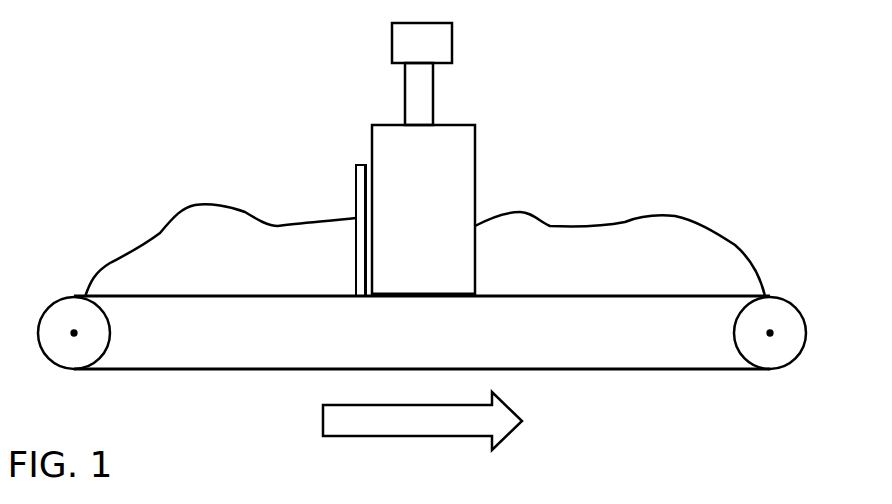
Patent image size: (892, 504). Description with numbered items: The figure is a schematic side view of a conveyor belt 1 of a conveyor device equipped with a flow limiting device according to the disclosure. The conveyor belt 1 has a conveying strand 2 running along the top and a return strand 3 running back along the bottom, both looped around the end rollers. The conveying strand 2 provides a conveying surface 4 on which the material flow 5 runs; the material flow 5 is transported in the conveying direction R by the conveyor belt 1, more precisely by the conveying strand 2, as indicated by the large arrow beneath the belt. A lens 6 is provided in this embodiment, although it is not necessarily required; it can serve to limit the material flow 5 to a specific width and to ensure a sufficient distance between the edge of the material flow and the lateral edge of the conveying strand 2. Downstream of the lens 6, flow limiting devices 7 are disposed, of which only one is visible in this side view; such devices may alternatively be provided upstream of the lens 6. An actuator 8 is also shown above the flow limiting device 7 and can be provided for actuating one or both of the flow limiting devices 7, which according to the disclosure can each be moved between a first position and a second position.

The conveyor belt 1 is at (422, 319).
The conveying strand 2 is at (718, 292).
The return strand 3 is at (664, 371).
The conveying surface 4 is at (580, 297).
The material flow 5 is at (193, 216).
The lens 6 is at (356, 175).
The flow limiting device 7 is at (463, 167).
The actuator 8 is at (447, 35).
The conveying direction R is at (415, 430).